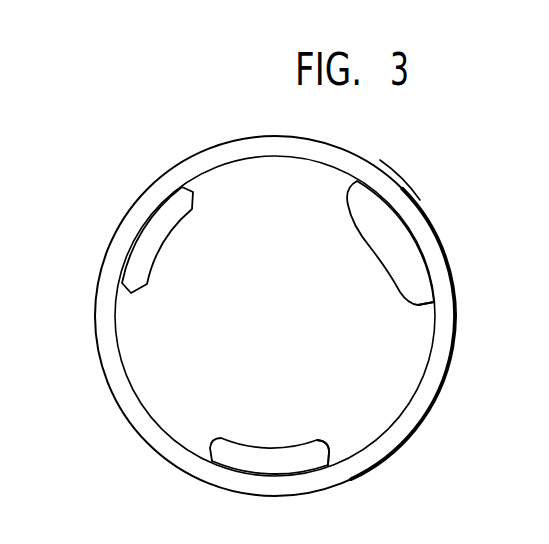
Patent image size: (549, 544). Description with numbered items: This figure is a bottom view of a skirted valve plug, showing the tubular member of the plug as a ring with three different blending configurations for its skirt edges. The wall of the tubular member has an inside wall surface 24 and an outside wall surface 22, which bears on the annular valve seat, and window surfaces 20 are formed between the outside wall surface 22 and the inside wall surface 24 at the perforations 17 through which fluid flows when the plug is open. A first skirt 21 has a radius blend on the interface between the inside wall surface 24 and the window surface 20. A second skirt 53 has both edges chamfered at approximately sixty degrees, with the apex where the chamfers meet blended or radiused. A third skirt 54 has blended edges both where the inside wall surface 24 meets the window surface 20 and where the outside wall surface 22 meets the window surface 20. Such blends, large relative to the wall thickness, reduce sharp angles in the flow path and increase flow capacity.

The perforations 17 is at (240, 173).
The window surface 20 is at (418, 305).
The first skirt 21 is at (413, 273).
The outside wall surface 22 is at (397, 212).
The inside wall surface 24 is at (281, 354).
The second skirt 53 is at (153, 235).
The third skirt 54 is at (312, 460).